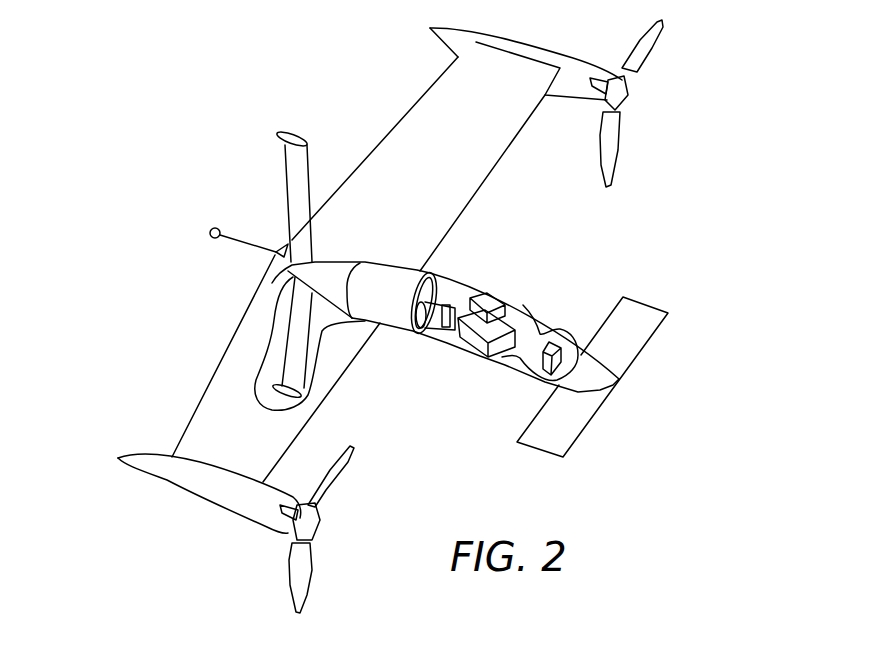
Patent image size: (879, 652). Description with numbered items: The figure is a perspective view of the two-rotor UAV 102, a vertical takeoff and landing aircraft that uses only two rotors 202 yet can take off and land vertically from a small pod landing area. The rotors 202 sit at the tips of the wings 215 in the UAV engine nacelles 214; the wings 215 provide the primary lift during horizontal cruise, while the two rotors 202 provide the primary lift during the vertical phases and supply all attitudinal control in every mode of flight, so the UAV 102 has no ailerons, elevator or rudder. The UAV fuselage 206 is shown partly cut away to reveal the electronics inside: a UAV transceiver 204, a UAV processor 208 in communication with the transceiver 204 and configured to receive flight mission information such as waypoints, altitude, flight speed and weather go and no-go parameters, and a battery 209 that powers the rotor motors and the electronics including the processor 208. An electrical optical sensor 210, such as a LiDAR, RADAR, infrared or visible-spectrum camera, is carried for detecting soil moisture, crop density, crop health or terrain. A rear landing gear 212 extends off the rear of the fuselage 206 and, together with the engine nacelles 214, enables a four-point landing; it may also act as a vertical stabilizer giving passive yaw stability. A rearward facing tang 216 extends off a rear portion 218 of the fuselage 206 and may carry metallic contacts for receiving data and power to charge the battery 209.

The two-rotor UAV 102 is at (542, 296).
The rotors 202 is at (640, 70).
The UAV transceiver 204 is at (397, 325).
The UAV fuselage 206 is at (502, 357).
The UAV processor 208 is at (455, 343).
The battery 209 is at (382, 272).
The electrical optical sensors 210 is at (421, 272).
The rear landing gear 212 is at (295, 312).
The UAV engine nacelles 214 is at (428, 29).
The wings 215 is at (473, 172).
The rearward facing tang 216 is at (238, 233).
The rear portion of the fuselage 218 is at (263, 258).